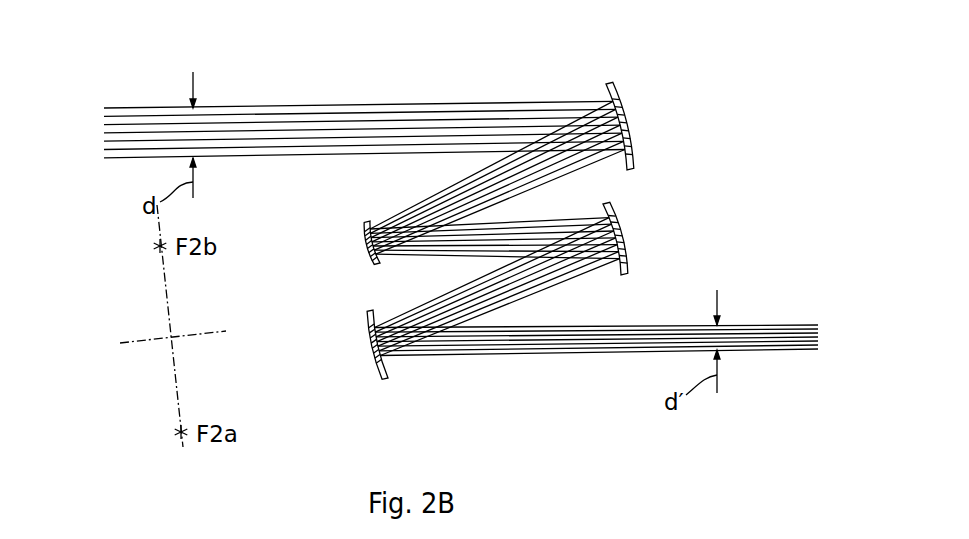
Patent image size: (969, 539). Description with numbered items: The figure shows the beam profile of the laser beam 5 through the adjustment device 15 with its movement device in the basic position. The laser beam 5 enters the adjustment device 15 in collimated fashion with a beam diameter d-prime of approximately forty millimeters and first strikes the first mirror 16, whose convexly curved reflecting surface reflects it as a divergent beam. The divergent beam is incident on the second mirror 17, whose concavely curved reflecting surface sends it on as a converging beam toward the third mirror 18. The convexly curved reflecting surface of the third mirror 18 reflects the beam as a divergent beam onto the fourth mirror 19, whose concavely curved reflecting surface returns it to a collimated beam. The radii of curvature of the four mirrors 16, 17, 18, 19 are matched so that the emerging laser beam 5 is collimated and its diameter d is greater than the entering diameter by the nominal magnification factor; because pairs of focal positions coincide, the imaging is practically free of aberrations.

The adjustment device 15 is at (153, 93).
The fourth mirror 19 is at (644, 122).
The third mirror 18 is at (359, 248).
The second mirror 17 is at (630, 233).
The first mirror 16 is at (371, 347).
The laser beam 5 is at (768, 325).